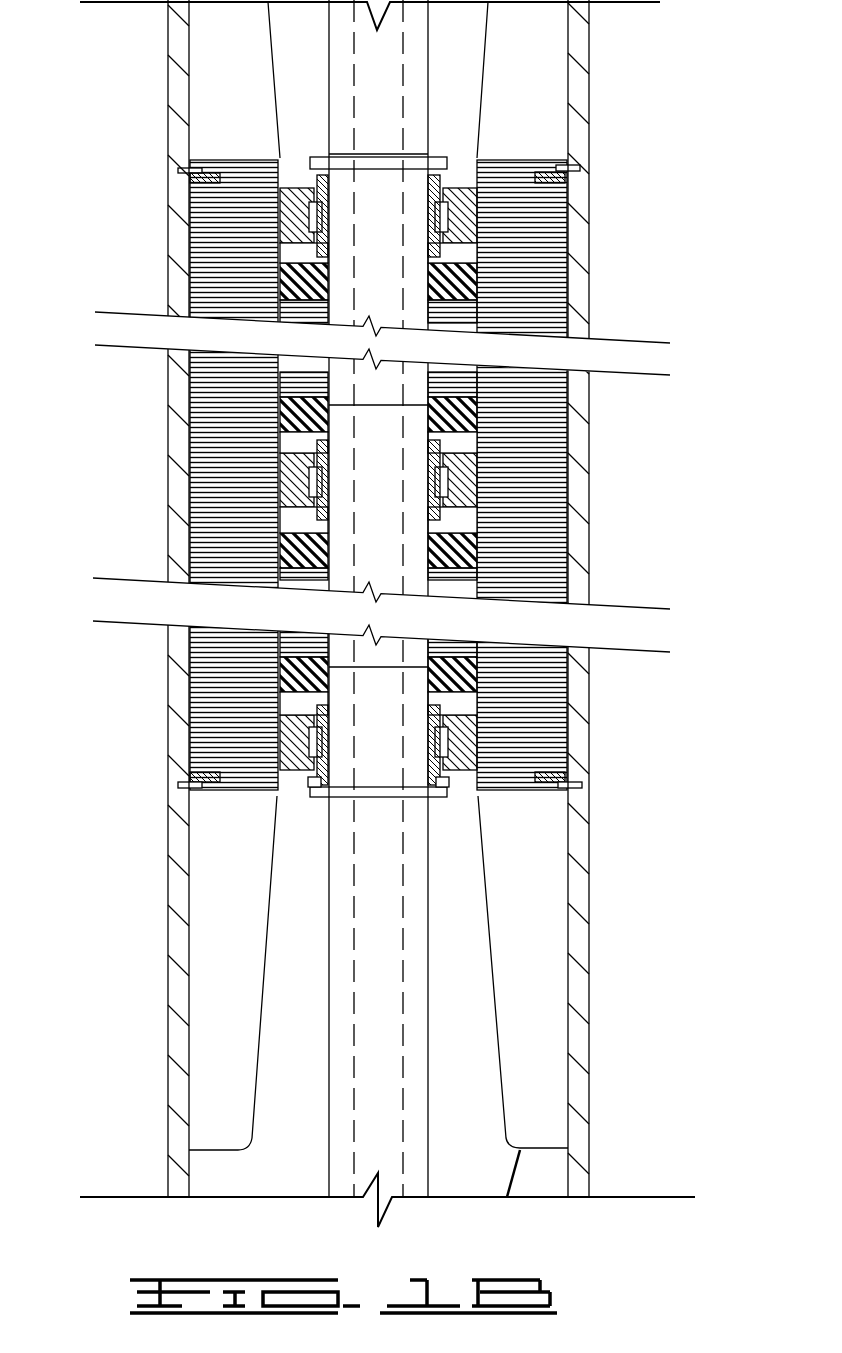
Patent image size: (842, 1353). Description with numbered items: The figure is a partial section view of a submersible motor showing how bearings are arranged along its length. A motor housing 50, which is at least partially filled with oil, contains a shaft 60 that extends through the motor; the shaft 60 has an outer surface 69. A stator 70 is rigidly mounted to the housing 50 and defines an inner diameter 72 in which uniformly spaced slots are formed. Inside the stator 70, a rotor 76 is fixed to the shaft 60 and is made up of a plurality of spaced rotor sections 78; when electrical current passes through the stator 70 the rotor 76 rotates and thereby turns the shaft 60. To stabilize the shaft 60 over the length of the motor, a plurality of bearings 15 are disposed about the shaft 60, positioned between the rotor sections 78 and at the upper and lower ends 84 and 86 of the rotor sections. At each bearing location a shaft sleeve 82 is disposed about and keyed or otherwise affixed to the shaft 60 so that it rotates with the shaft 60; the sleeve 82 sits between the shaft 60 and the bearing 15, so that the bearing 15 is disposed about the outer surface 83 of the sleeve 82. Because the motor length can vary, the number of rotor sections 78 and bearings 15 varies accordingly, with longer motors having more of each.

The bearing 15 is at (458, 222).
The motor housing 50 is at (178, 452).
The shaft 60 is at (365, 882).
The outer surface 69 is at (432, 914).
The stator 70 is at (548, 307).
The inner diameter 72 is at (480, 381).
The rotor 76 is at (460, 280).
The rotor section 78 is at (485, 474).
The shaft sleeve 82 is at (318, 208).
The outer surface 83 is at (440, 481).
The upper end 84 is at (293, 256).
The lower end 86 is at (474, 707).